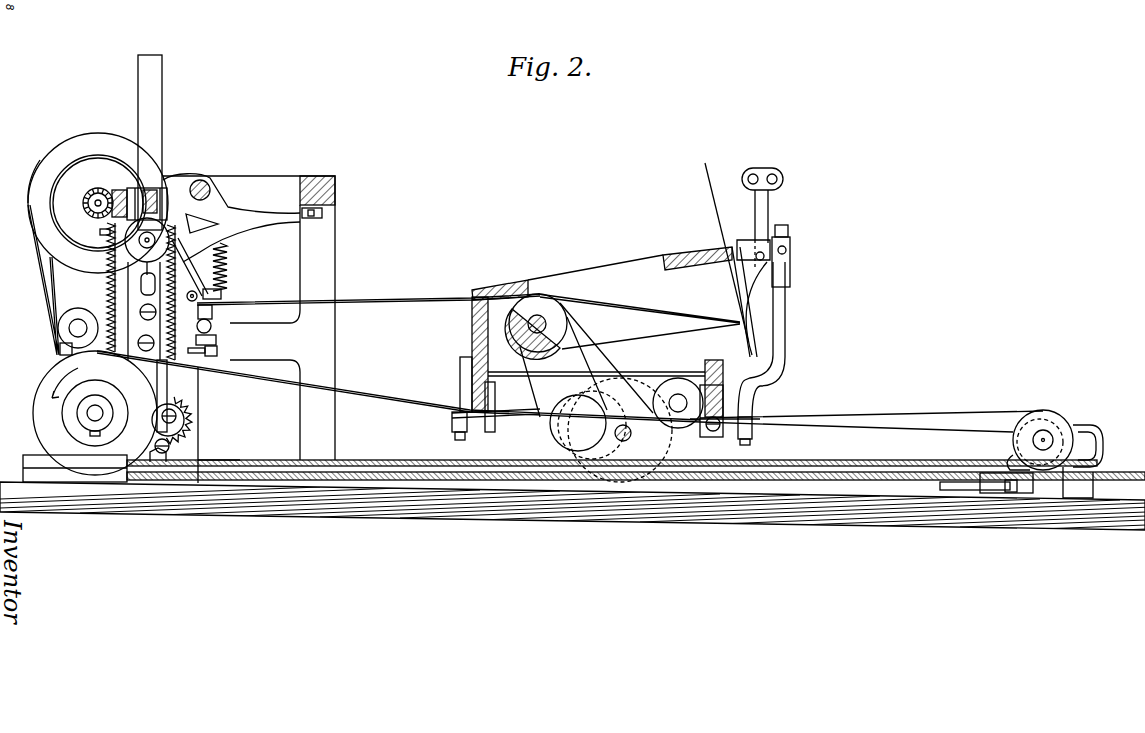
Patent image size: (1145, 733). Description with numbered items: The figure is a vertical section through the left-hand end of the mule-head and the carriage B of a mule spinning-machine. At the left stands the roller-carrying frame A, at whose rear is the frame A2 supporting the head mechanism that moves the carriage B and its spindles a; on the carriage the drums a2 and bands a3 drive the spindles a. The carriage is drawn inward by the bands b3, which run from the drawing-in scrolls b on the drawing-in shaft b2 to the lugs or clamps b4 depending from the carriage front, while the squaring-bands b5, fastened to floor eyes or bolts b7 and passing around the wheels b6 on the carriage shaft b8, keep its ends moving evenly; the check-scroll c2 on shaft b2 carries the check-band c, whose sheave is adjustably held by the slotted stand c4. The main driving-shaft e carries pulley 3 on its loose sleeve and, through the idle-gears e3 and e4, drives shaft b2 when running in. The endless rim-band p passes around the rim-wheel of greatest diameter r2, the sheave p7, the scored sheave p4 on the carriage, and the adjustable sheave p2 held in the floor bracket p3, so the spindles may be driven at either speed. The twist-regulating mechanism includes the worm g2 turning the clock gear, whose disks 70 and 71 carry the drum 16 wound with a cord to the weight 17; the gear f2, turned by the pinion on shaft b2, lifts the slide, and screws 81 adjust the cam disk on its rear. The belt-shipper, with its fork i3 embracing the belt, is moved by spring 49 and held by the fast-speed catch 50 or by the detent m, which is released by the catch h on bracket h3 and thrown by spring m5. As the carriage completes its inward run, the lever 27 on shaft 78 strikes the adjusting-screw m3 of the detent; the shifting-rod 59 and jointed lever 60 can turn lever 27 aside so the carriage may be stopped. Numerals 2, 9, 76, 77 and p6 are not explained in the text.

The frame A2 is at (163, 112).
The rim-wheel of greatest diameter r2 is at (98, 203).
The wheel rim 2 is at (56, 187).
The main driving-shaft e is at (82, 205).
The bevel gear 76 is at (100, 188).
The bevel gear 77 is at (118, 189).
The worm g2 is at (152, 190).
The disk 70 is at (190, 226).
The disk 71 is at (147, 246).
The drum 16 is at (141, 240).
The idle-gear e3 is at (100, 232).
The spring 49 is at (183, 284).
The spring m5 is at (226, 268).
The detent m is at (222, 294).
The weight 17 is at (149, 296).
The pulley 3 is at (142, 337).
The bracket h3 is at (212, 312).
The catch h is at (212, 326).
The adjusting-screw m3 is at (218, 352).
The idle-gear e4 is at (60, 349).
The sheave p7 is at (78, 309).
The drawing-in scroll b is at (95, 413).
The drawing-in shaft b2 is at (97, 406).
The bar 9 is at (163, 396).
The fast-speed catch 50 is at (186, 401).
The screws 81 is at (162, 416).
The fork i3 is at (219, 425).
The gear f2 is at (155, 462).
The roller-carrying frame A is at (302, 177).
The band b3 is at (366, 396).
The rim-band p is at (32, 258).
The lever 27 is at (460, 393).
The carriage B is at (621, 290).
The spindles a is at (735, 283).
The drum a2 is at (596, 363).
The bands a3 is at (639, 321).
The shifting-rod 59 is at (790, 250).
The jointed lever 60 is at (780, 318).
The squaring-band b5 is at (520, 316).
The scored sheave p4 is at (678, 392).
The shaft 78 is at (742, 417).
The pulley p6 is at (573, 438).
The shaft b8 is at (621, 442).
The lug or clamp b4 is at (712, 432).
The wheel b6 is at (648, 478).
The adjustable sheave p2 is at (1052, 432).
The check-scroll c2 is at (1043, 449).
The bracket p3 is at (1101, 438).
The check-band c is at (994, 451).
The slotted stand c4 is at (1010, 455).
The eye or bolt b7 is at (1011, 492).